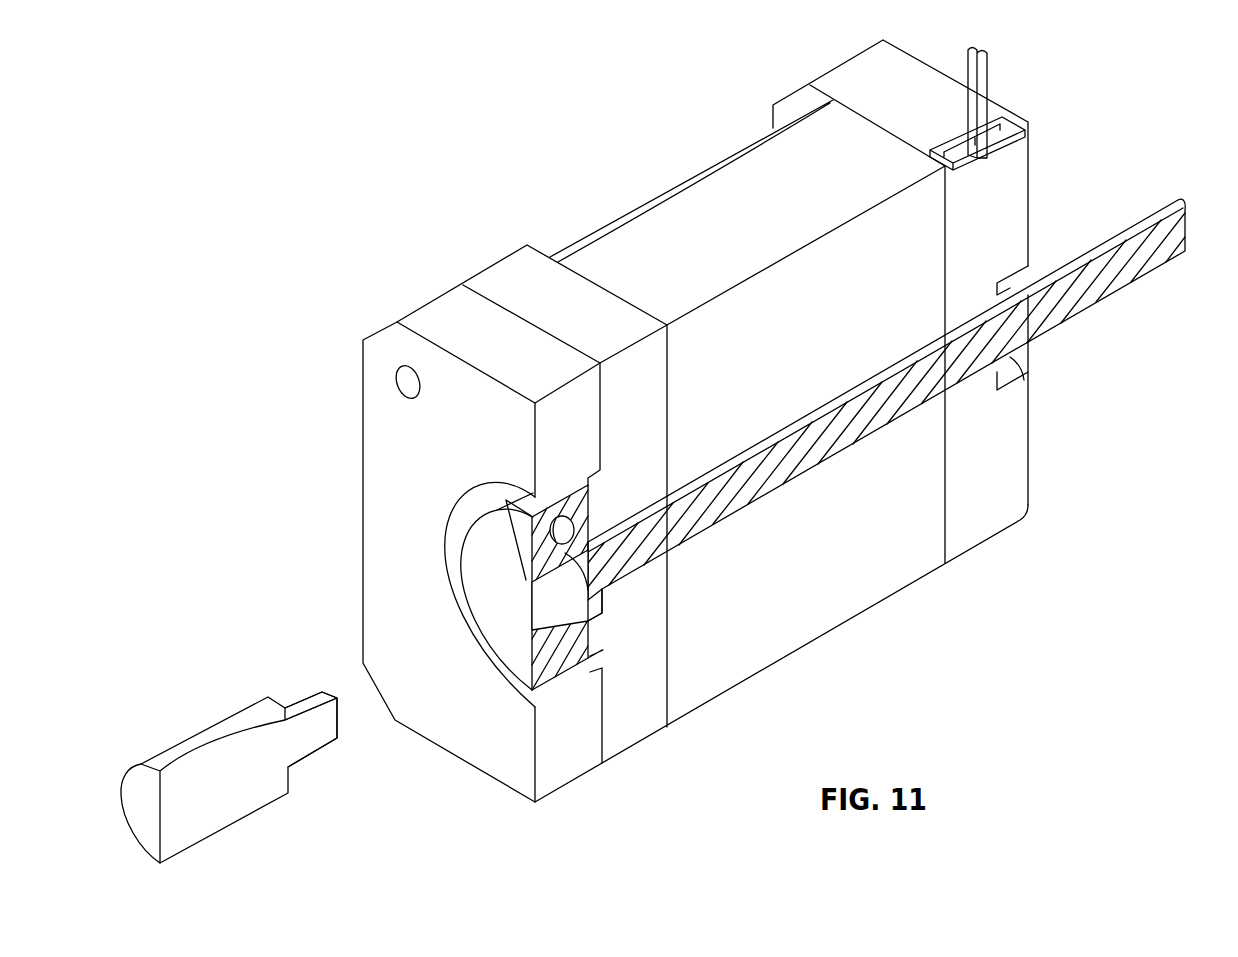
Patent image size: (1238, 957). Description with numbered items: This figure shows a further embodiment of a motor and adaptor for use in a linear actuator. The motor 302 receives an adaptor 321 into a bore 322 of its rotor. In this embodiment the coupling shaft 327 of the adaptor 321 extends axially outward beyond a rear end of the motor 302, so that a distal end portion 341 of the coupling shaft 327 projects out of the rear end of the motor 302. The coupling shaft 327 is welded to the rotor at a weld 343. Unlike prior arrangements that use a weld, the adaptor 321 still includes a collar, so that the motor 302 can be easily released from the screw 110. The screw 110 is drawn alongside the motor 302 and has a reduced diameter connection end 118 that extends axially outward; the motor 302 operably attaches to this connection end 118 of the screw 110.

The motor 302 is at (746, 421).
The distal end portion 341 is at (1128, 203).
The bore 322 is at (883, 405).
The weld 343 is at (1005, 357).
The adaptor 321 is at (733, 493).
The coupling shaft 327 is at (678, 528).
The screw 110 is at (195, 750).
The connection end 118 is at (305, 700).